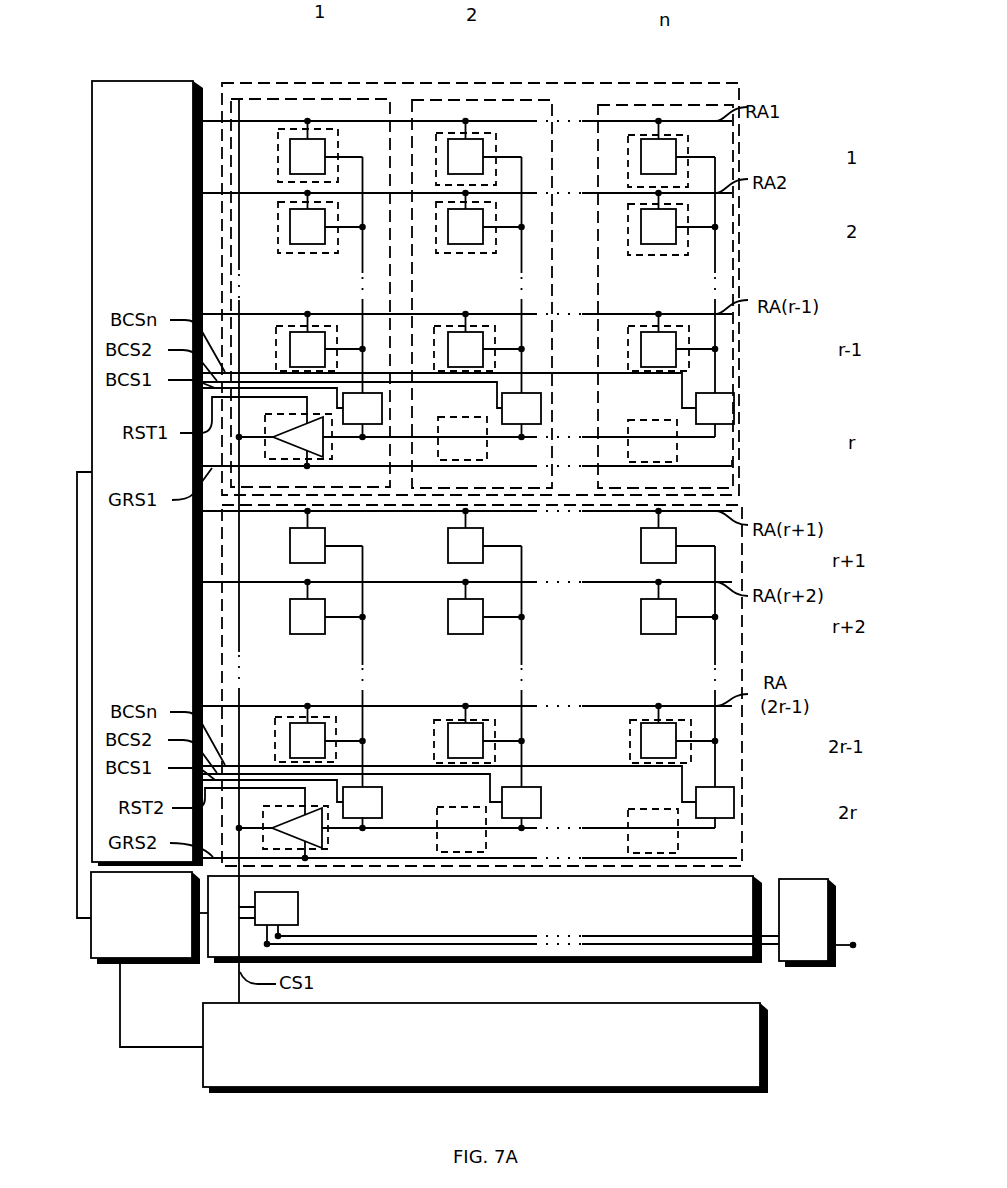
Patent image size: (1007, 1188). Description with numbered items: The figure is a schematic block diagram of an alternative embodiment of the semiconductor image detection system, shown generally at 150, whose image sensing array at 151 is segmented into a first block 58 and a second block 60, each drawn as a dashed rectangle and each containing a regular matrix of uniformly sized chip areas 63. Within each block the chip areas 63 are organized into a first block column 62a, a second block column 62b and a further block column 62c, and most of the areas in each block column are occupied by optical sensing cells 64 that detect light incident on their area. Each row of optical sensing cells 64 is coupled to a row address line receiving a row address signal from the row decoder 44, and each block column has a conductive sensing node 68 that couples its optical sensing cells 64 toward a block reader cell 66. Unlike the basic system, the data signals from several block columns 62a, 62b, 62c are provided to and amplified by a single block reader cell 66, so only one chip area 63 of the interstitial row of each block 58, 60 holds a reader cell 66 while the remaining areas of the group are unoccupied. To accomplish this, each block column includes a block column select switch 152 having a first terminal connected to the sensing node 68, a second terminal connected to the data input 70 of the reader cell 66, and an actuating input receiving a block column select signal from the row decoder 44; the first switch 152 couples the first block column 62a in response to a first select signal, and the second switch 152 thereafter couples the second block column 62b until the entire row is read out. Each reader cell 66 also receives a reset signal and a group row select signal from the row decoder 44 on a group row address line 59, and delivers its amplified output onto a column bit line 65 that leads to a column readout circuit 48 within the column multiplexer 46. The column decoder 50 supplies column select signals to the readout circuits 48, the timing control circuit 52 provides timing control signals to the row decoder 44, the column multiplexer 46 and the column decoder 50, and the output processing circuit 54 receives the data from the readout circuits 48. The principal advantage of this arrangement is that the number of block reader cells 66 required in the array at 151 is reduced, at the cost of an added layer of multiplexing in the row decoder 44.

The alternative embodiment of the semiconductor image detection system 150 is at (126, 54).
The image sensing array 151 is at (759, 60).
The row decoder 44 is at (153, 629).
The first block 58 is at (567, 85).
The second block 60 is at (743, 506).
The first block column 62a is at (306, 98).
The second block column 62b is at (469, 100).
The block column 62c is at (654, 105).
The chip area 63 is at (436, 142).
The optical sensing cell 64 is at (318, 166).
The sensing node 68 is at (362, 258).
The block column select switch 152 is at (380, 418).
The block reader cell 66 is at (284, 631).
The data input 70 is at (326, 441).
The group row address line 59 is at (226, 468).
The column bit line 65 is at (240, 555).
The column multiplexer 46 is at (760, 877).
The column readout circuit 48 is at (288, 918).
The timing control circuit 52 is at (154, 949).
The output processing circuit 54 is at (816, 941).
The column decoder 50 is at (492, 1081).